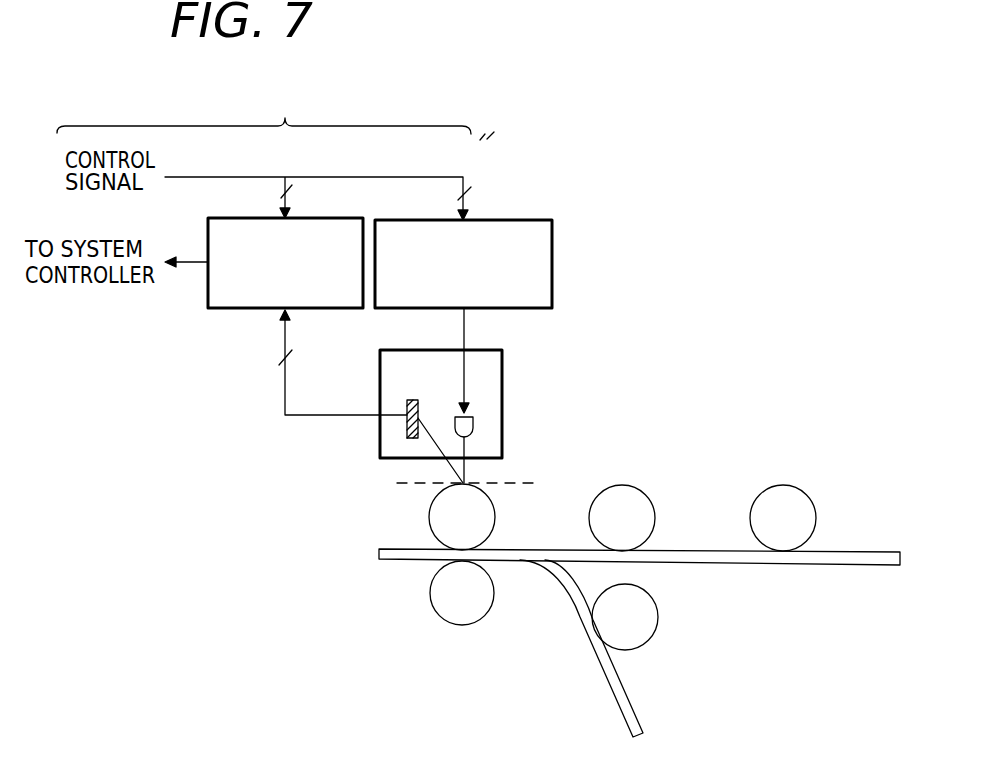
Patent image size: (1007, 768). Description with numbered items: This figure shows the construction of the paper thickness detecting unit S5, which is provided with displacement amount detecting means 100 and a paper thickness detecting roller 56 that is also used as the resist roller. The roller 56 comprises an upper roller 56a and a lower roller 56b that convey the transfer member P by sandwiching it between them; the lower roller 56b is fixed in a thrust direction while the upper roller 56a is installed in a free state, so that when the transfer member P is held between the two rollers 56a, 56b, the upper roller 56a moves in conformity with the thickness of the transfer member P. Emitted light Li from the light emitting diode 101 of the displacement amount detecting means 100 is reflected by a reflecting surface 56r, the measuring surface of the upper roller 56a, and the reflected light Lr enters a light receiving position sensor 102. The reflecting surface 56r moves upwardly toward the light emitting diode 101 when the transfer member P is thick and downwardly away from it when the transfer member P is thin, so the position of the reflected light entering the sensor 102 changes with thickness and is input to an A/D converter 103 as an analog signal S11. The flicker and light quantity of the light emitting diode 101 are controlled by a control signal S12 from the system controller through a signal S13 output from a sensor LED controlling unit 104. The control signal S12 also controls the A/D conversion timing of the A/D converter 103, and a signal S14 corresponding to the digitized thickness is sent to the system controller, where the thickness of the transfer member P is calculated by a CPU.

The displacement amount detecting means 100 is at (275, 115).
The light emitting diode 101 is at (473, 428).
The light receiving position sensor 102 is at (412, 400).
The A/D converter 103 is at (323, 217).
The sensor LED controlling unit 104 is at (505, 219).
The paper thickness detecting unit S5 is at (511, 179).
The analog signal S11 is at (287, 387).
The control signal S12 is at (378, 176).
The signal S13 is at (465, 330).
The signal S14 is at (201, 254).
The reflected light Lr is at (460, 478).
The emitted light Li is at (468, 478).
The resist roller 56 is at (476, 581).
The upper roller 56a is at (496, 524).
The lower roller 56b is at (489, 607).
The reflecting surface 56r is at (417, 484).
The transfer member P is at (627, 698).